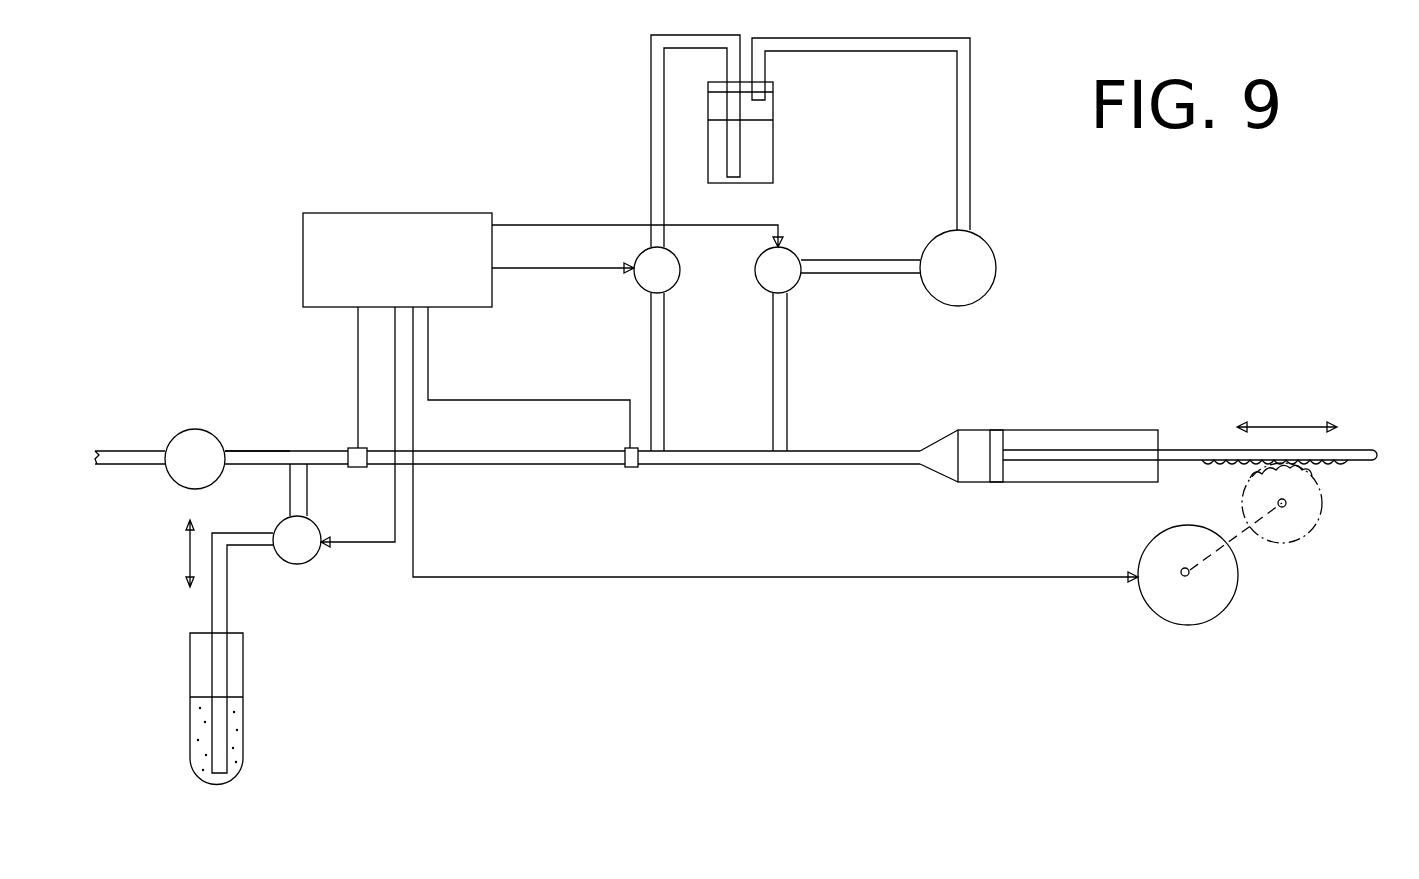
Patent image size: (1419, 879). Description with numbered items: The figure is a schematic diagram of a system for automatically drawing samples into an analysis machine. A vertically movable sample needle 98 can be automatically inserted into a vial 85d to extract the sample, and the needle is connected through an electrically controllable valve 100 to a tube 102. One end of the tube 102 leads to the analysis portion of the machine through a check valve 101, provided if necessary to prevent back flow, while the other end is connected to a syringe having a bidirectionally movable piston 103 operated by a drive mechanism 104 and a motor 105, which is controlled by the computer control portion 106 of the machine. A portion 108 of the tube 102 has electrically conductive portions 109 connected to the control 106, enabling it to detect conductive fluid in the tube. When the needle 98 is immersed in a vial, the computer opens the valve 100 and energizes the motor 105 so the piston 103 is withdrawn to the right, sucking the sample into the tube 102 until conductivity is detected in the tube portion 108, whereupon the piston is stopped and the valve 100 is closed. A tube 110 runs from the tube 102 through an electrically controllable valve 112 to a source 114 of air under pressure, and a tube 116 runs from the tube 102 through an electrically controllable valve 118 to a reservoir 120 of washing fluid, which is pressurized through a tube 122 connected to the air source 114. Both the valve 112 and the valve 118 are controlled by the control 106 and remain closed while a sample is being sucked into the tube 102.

The vial 85d is at (244, 722).
The sample needle 98 is at (210, 593).
The electrically controllable valve 100 is at (297, 564).
The check valve 101 is at (193, 428).
The tube 102 is at (247, 451).
The piston 103 is at (1003, 440).
The drive mechanism 104 is at (1358, 487).
The motor 105 is at (1218, 612).
The computer control portion 106 is at (380, 213).
The tube portion 108 is at (487, 465).
The electrically conductive portions 109 is at (358, 448).
The tube 110 is at (788, 373).
The electrically controllable valve 112 is at (795, 283).
The air source 114 is at (998, 273).
The tube 116 is at (665, 357).
The electrically controllable valve 118 is at (638, 290).
The reservoir 120 is at (773, 172).
The tube 122 is at (957, 97).